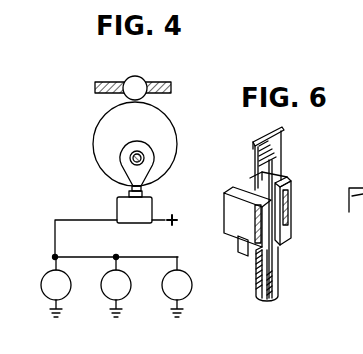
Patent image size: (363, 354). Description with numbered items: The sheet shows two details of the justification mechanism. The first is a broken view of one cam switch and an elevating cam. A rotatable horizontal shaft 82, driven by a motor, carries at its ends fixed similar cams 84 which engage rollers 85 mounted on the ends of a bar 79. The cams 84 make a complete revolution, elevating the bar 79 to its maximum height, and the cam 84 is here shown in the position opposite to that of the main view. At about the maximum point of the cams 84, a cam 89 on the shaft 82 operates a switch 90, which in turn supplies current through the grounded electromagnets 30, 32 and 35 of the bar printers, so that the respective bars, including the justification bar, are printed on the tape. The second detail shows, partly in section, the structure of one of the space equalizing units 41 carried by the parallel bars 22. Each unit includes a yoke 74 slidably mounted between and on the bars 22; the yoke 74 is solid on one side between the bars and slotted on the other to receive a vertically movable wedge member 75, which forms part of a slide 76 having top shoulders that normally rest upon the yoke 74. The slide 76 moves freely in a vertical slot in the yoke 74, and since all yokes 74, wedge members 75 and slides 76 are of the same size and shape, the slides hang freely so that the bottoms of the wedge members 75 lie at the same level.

In FIG. 4, the bar 79 is at (102, 82).
In FIG. 4, the roller 85 is at (142, 80).
In FIG. 4, the cam 84 is at (170, 128).
In FIG. 4, the cam 89 is at (121, 180).
In FIG. 4, the rotatable horizontal shaft 82 is at (137, 151).
In FIG. 4, the switch 90 is at (117, 209).
In FIG. 4, the electromagnet 32 is at (50, 300).
In FIG. 4, the electromagnet 30 is at (115, 300).
In FIG. 4, the electromagnet 35 is at (167, 292).
In FIG. 6, the space equalizing unit 41 is at (286, 158).
In FIG. 6, the parallel bar 22 is at (237, 228).
In FIG. 6, the yoke 74 is at (248, 252).
In FIG. 6, the wedge member 75 is at (274, 264).
In FIG. 6, the slide 76 is at (257, 290).